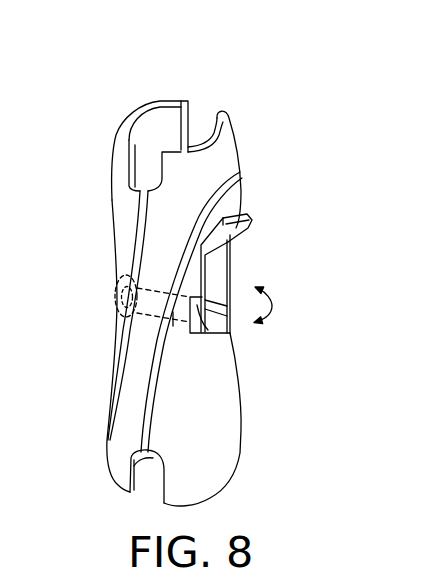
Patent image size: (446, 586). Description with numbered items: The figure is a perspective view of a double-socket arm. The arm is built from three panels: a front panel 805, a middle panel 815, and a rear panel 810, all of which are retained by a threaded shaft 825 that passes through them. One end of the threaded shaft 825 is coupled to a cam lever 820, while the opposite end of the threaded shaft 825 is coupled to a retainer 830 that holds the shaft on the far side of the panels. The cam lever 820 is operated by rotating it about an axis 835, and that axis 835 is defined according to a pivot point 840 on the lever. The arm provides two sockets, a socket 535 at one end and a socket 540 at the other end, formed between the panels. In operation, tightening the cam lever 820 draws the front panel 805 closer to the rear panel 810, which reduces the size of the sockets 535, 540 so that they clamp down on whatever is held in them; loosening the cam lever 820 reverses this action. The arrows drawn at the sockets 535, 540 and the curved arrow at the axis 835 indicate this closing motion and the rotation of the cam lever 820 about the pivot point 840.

The front panel 805 is at (203, 459).
The rear panel 810 is at (133, 225).
The middle panel 815 is at (227, 160).
The cam lever 820 is at (253, 230).
The threaded shaft 825 is at (172, 320).
The retainer 830 is at (115, 298).
The axis 835 is at (238, 308).
The pivot point 840 is at (203, 326).
The socket 535 is at (197, 117).
The socket 540 is at (148, 487).